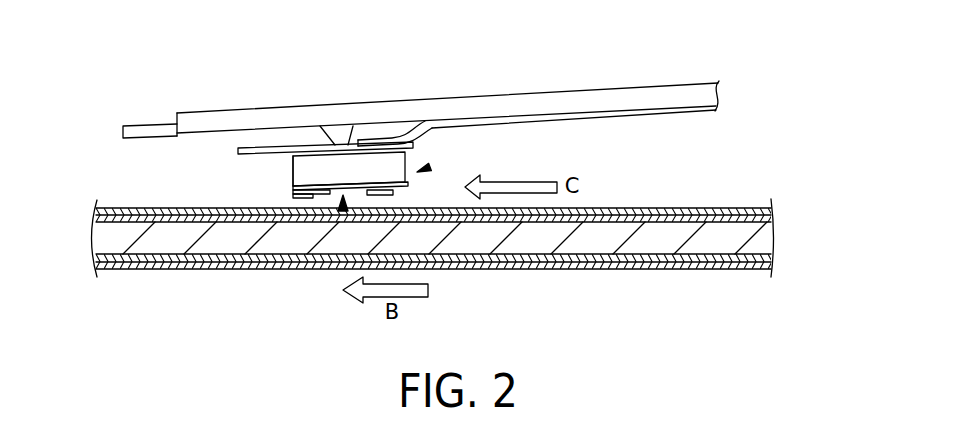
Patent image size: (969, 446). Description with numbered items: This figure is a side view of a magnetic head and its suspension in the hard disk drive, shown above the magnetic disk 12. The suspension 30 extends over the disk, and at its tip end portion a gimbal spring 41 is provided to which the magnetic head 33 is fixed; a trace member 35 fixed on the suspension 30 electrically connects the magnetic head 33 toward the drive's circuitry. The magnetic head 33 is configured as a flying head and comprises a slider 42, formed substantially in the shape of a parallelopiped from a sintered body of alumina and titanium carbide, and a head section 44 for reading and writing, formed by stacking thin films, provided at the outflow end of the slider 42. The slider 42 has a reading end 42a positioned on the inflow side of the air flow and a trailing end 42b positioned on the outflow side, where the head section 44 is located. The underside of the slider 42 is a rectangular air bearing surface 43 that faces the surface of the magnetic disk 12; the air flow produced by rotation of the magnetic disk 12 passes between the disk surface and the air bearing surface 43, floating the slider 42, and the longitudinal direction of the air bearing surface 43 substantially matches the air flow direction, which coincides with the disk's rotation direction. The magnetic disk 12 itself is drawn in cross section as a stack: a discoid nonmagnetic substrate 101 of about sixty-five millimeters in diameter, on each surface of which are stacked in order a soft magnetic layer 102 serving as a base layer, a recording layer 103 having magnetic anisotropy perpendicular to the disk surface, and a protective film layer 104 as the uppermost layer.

The magnetic disk 12 is at (474, 228).
The suspension 30 is at (596, 95).
The magnetic head 33 is at (430, 167).
The trace member 35 is at (662, 113).
The gimbal spring 41 is at (366, 141).
The slider 42 is at (320, 168).
The reading end 42a is at (408, 163).
The trailing end 42b is at (287, 184).
The air bearing surface 43 is at (343, 211).
The head section 44 is at (297, 172).
The substrate 101 is at (676, 247).
The soft magnetic layer 102 is at (769, 226).
The recording layer 103 is at (702, 209).
The protective film layer 104 is at (769, 206).